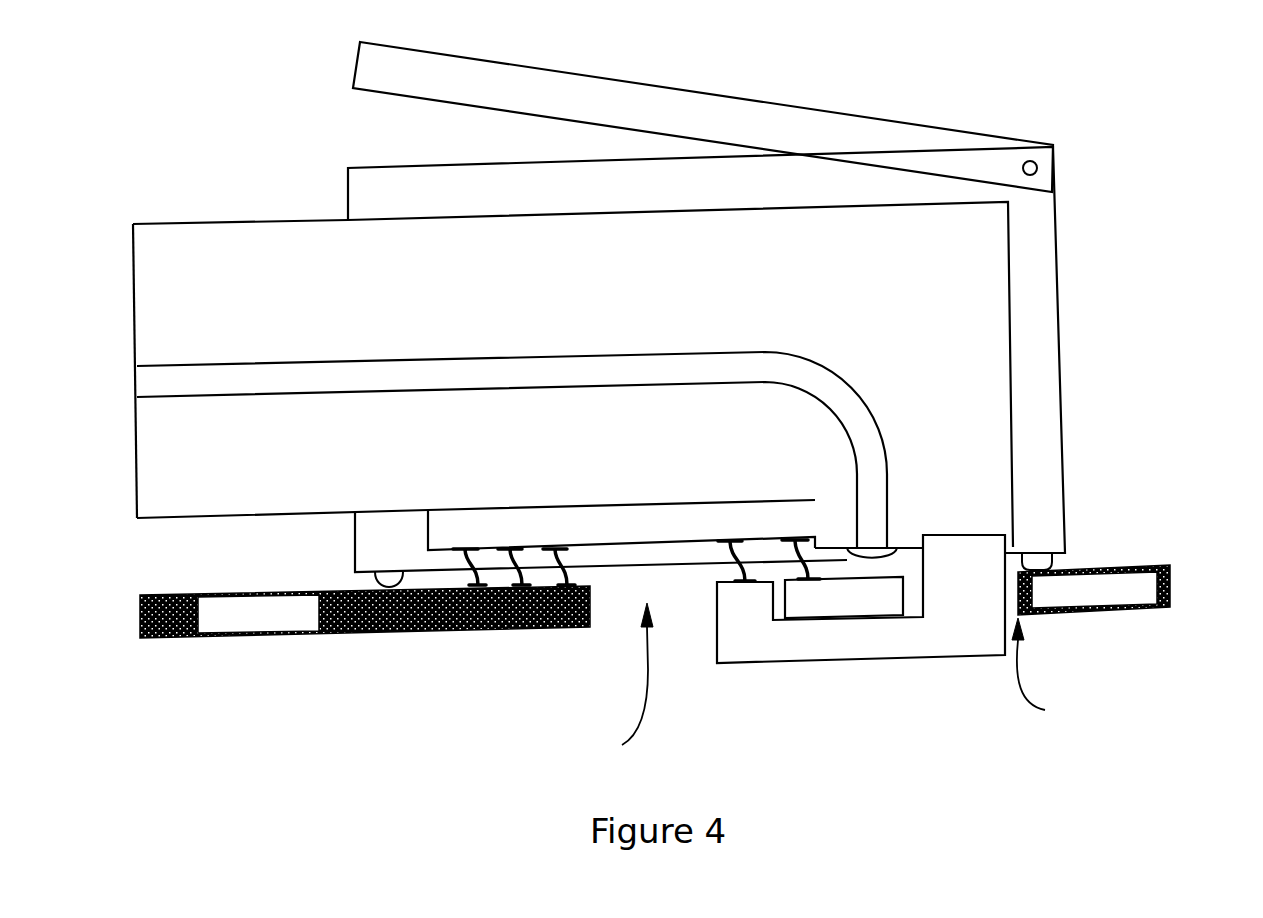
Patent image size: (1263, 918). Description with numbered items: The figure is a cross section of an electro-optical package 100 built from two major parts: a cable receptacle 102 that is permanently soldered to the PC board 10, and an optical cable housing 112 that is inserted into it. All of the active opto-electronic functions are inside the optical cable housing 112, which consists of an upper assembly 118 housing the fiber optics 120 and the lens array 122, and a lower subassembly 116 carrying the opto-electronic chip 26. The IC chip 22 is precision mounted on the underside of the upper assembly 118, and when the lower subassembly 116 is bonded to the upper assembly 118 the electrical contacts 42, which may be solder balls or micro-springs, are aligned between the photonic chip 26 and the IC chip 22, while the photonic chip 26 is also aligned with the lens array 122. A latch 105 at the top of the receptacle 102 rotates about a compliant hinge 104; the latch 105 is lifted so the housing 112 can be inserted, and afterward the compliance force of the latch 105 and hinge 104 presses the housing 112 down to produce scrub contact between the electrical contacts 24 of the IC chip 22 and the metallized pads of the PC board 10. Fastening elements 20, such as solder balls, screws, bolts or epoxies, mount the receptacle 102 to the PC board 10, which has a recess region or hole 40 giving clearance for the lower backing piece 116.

The PC board 10 is at (140, 620).
The fastening elements 20 is at (376, 581).
The IC chip 22 is at (638, 538).
The electrical contacts 24 is at (577, 572).
The opto-electronic chip 26 is at (862, 611).
The recess region or hole 40 is at (834, 683).
The electrical contacts 42 is at (717, 582).
The electro-optical package 100 is at (240, 712).
The cable receptacle 102 is at (1065, 290).
The compliant hinge 104 is at (1034, 163).
The latch 105 is at (552, 87).
The optical cable housing 112 is at (548, 307).
The lower subassembly 116 is at (988, 636).
The upper assembly 118 is at (133, 295).
The fiber optics 120 is at (670, 352).
The lens array 122 is at (892, 547).